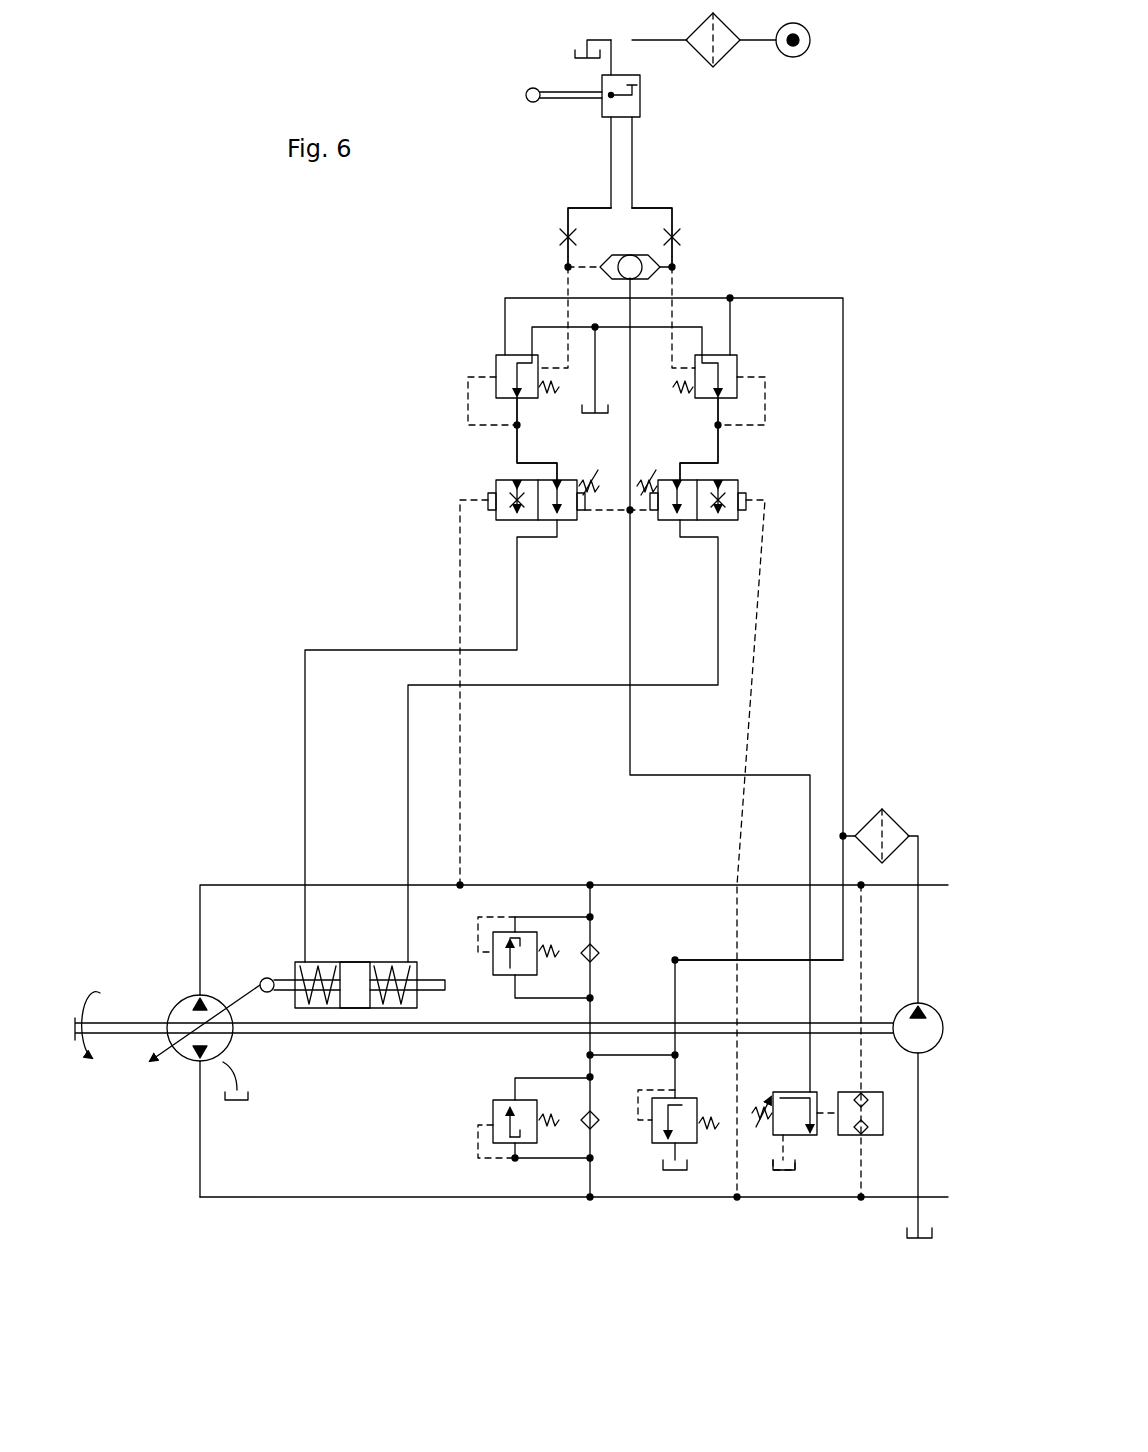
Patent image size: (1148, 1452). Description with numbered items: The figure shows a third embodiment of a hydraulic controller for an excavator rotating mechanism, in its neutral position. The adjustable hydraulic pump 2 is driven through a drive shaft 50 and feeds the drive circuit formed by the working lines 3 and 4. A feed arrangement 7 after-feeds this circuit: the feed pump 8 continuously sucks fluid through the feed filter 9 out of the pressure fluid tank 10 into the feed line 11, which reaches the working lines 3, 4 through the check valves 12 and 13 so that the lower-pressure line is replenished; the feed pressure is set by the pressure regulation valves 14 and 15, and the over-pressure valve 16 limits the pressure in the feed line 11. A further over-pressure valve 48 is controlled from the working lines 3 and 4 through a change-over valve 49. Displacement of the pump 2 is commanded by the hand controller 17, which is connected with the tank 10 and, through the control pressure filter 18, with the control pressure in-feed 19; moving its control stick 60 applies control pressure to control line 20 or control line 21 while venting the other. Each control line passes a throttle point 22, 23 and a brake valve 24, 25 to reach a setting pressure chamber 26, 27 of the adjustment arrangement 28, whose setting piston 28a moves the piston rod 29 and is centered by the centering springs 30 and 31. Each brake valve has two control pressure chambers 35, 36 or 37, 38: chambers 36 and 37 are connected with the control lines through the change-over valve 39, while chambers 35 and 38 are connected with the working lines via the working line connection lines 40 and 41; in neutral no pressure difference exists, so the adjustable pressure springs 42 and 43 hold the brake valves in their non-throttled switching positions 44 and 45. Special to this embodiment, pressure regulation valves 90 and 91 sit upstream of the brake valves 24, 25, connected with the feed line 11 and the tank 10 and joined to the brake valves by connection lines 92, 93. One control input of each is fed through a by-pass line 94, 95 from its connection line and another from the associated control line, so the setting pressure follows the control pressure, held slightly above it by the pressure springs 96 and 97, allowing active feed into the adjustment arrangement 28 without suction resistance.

The adjustable hydraulic pump 2 is at (233, 1053).
The working line 3 is at (635, 883).
The working line 4 is at (470, 1200).
The feed arrangement 7 is at (645, 986).
The feed pump 8 is at (933, 1055).
The feed filter 9 is at (895, 820).
The pressure fluid tank 10 is at (577, 55).
The feed line 11 is at (713, 960).
The check valve 12 is at (597, 1123).
The check valve 13 is at (597, 947).
The pressure regulation valve 14 is at (502, 970).
The pressure regulation valve 15 is at (498, 1110).
The over-pressure valve 16 is at (678, 1098).
The hand controller 17 is at (640, 92).
The control pressure filter 18 is at (720, 53).
The control pressure in-feed 19 is at (800, 52).
The control line 20 is at (593, 208).
The control line 21 is at (652, 208).
The throttle point 22 is at (561, 236).
The throttle point 23 is at (681, 236).
The brake valve 24 is at (524, 508).
The brake valve 25 is at (726, 513).
The setting pressure chamber 26 is at (320, 960).
The setting pressure chamber 27 is at (382, 960).
The adjustment arrangement 28 is at (353, 930).
The setting piston 28a is at (363, 985).
The piston rod 29 is at (277, 977).
The centering spring 30 is at (422, 960).
The centering spring 31 is at (305, 960).
The control pressure chamber 35 is at (490, 497).
The control pressure chamber 36 is at (583, 517).
The control pressure chamber 37 is at (650, 513).
The control pressure chamber 38 is at (747, 495).
The change-over valve 39 is at (628, 253).
The working line connection line 40 is at (460, 633).
The working line connection line 41 is at (747, 715).
The adjustable pressure spring 42 is at (584, 476).
The adjustable pressure spring 43 is at (641, 476).
The non-throttled switching position 44 is at (563, 520).
The non-throttled switching position 45 is at (663, 520).
The over-pressure valve 48 is at (795, 1137).
The change-over valve 49 is at (868, 1137).
The drive shaft 50 is at (128, 1022).
The control stick 60 is at (552, 88).
The pressure regulation valve 90 is at (495, 357).
The pressure regulation valve 91 is at (738, 355).
The connection line 92 is at (517, 442).
The connection line 93 is at (720, 450).
The by-pass line 94 is at (468, 393).
The by-pass line 95 is at (767, 400).
The pressure spring 96 is at (552, 397).
The pressure spring 97 is at (683, 397).